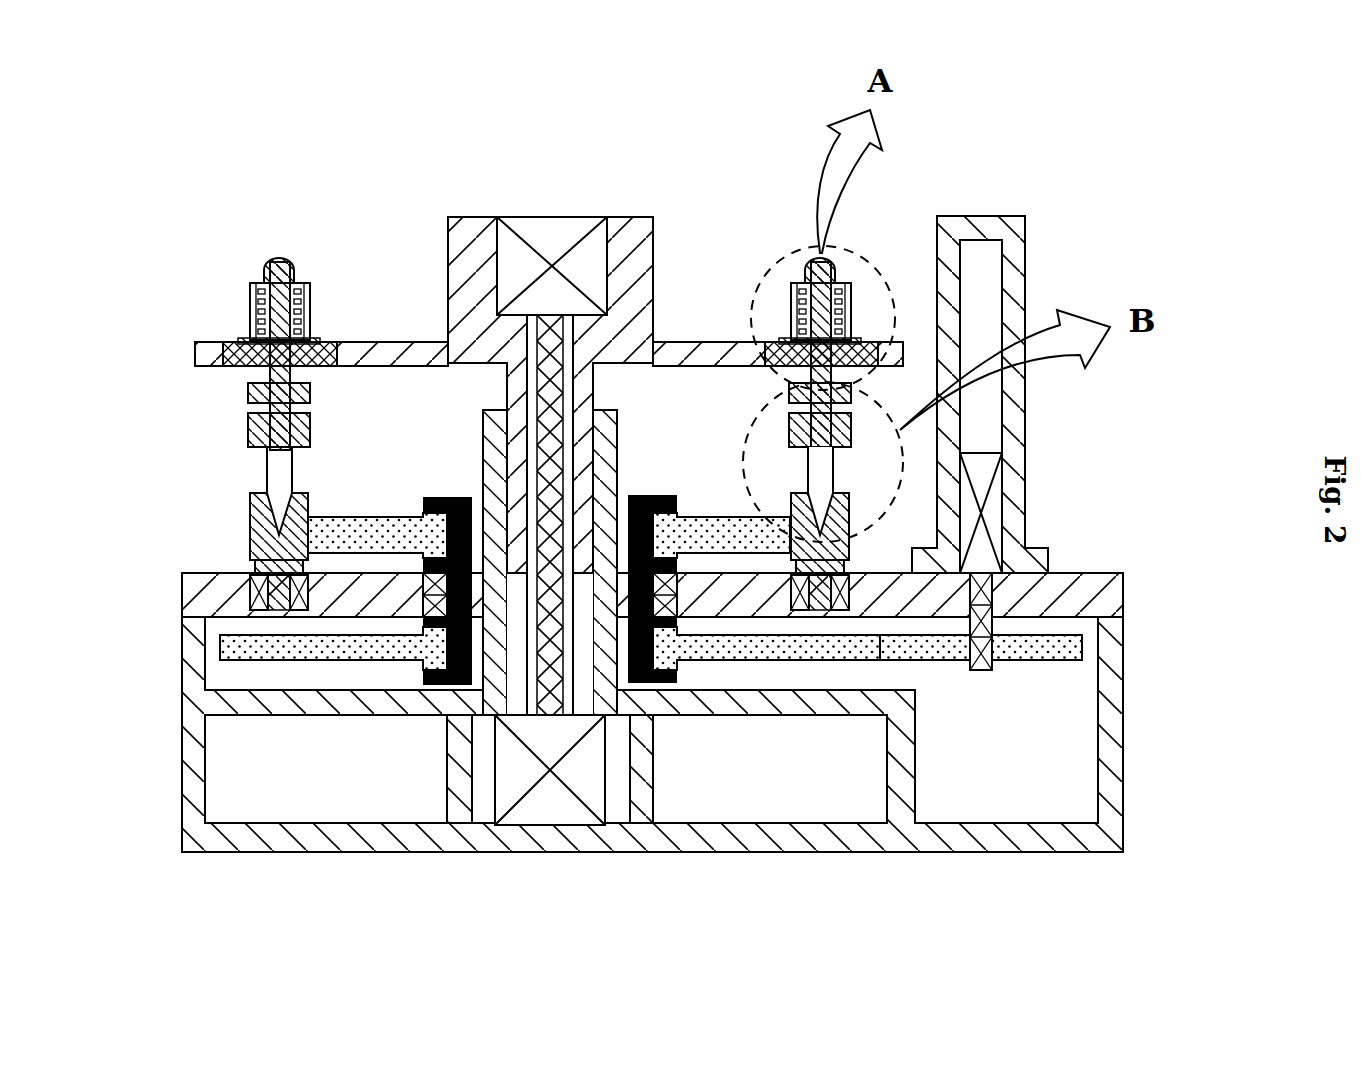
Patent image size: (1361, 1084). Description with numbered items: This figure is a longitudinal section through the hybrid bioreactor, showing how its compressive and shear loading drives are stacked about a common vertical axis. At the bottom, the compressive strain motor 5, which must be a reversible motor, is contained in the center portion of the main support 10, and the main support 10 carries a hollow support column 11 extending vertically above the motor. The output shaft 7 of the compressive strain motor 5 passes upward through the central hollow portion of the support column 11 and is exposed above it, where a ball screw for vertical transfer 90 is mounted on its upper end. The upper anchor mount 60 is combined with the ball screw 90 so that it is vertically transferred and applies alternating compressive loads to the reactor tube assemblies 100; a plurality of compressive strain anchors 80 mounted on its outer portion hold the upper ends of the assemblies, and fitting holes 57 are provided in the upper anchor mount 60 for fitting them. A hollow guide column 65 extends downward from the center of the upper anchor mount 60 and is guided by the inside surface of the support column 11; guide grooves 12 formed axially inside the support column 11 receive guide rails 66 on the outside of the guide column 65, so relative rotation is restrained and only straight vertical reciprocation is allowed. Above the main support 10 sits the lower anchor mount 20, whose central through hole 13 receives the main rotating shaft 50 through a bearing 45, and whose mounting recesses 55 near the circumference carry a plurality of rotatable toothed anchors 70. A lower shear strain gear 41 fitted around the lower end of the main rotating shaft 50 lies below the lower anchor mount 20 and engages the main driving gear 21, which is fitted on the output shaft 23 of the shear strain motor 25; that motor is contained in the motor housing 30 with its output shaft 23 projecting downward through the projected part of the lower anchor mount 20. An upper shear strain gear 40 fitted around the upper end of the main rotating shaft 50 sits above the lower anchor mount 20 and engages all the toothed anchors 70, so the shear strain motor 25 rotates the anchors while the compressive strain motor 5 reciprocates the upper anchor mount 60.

The compressive strain motor 5 is at (560, 810).
The output shaft 7 is at (548, 685).
The main support 10 is at (182, 735).
The support column 11 is at (498, 640).
The guide grooves 12 is at (505, 585).
The through hole 13 is at (247, 583).
The lower anchor mount 20 is at (186, 592).
The main driving gear 21 is at (1062, 648).
The output shaft 23 is at (985, 672).
The shear strain motor 25 is at (1002, 510).
The motor housing 30 is at (1024, 398).
The upper shear strain gear 40 is at (700, 530).
The lower shear strain gear 41 is at (802, 650).
The bearing 45 is at (428, 592).
The main rotating shaft 50 is at (656, 490).
The mounting recesses 55 is at (423, 580).
The fitting holes 57 is at (196, 357).
The upper anchor mount 60 is at (453, 233).
The guide column 65 is at (505, 440).
The guide rails 66 is at (493, 458).
The toothed anchors 70 is at (248, 540).
The compressive strain anchors 80 is at (245, 303).
The ball screw for vertical transfer 90 is at (550, 233).
The reactor tube assemblies 100 is at (245, 432).